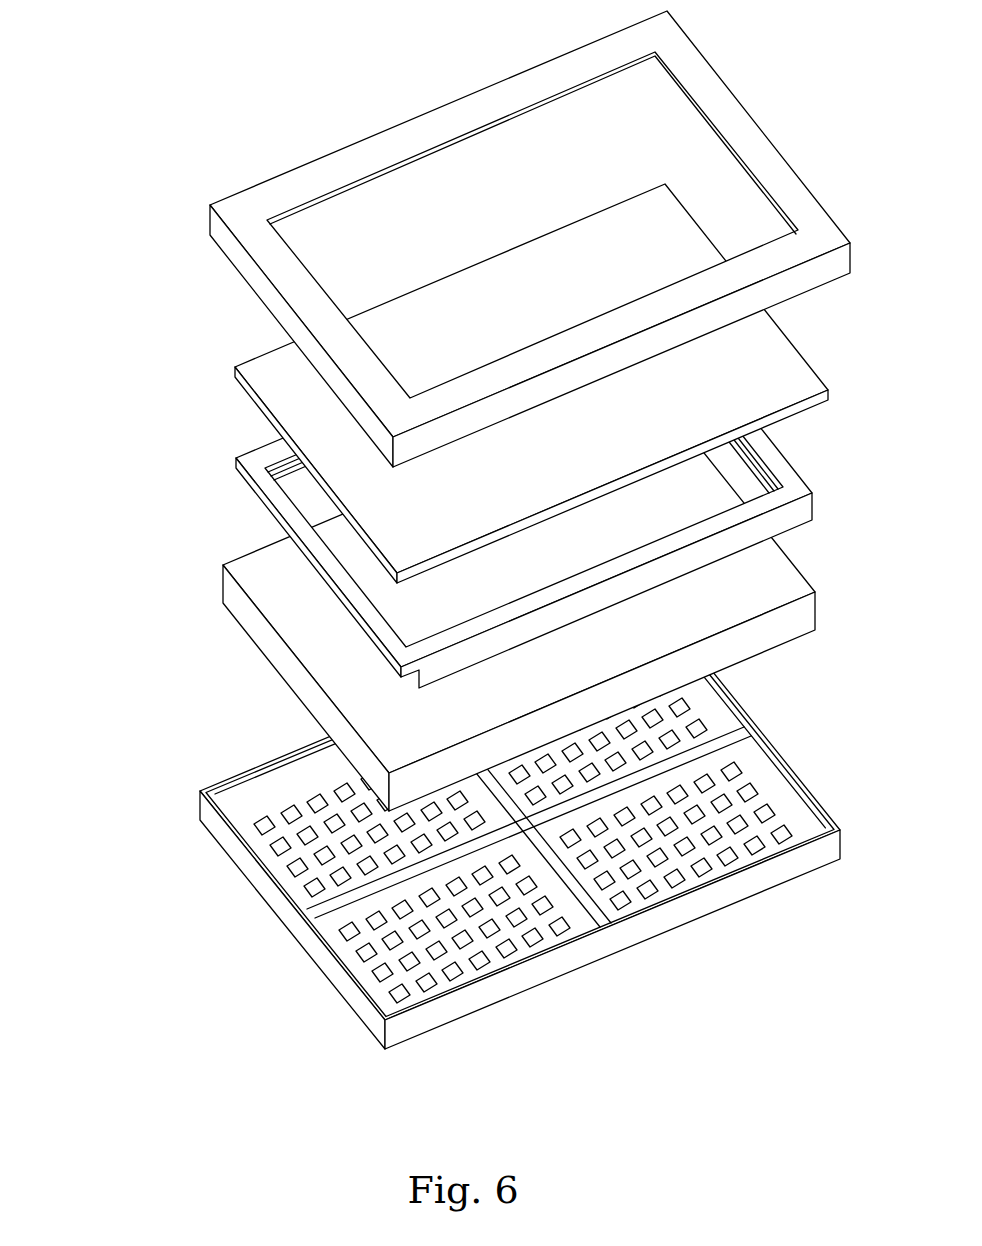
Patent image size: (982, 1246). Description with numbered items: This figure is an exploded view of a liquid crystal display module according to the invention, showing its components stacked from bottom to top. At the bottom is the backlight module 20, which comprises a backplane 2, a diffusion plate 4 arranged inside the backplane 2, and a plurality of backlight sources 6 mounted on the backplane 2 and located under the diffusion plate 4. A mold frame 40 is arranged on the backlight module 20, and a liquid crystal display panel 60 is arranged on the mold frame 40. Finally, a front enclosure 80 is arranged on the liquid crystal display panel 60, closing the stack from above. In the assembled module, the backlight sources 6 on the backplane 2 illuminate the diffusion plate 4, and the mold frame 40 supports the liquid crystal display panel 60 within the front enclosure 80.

The backplane 2 is at (210, 818).
The diffusion plate 4 is at (318, 637).
The backlight sources 6 is at (327, 822).
The backlight module 20 is at (107, 597).
The mold frame 40 is at (252, 465).
The liquid crystal display panel 60 is at (252, 372).
The front enclosure 80 is at (252, 222).